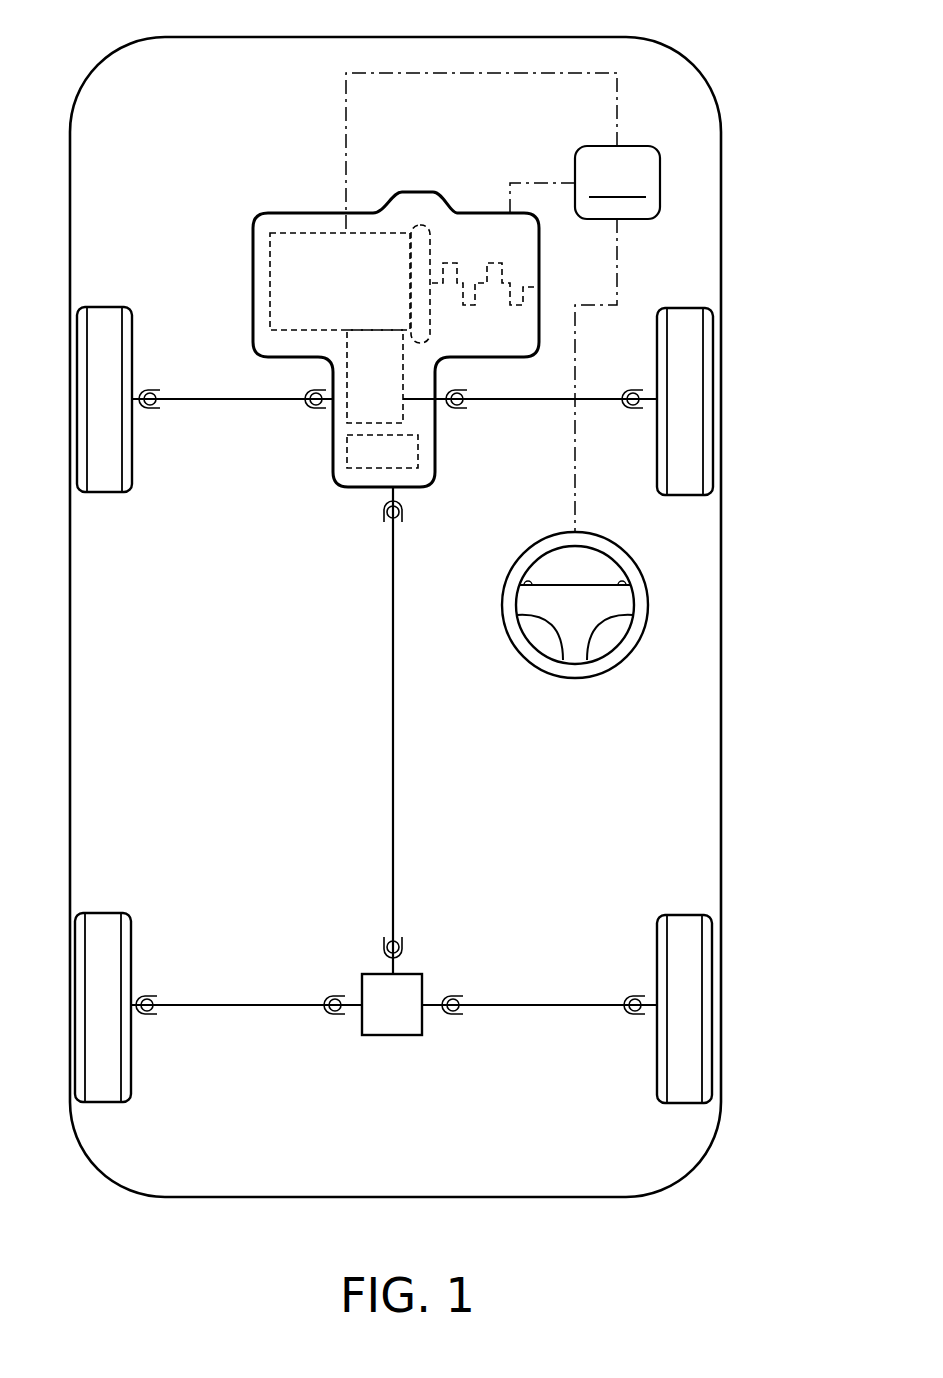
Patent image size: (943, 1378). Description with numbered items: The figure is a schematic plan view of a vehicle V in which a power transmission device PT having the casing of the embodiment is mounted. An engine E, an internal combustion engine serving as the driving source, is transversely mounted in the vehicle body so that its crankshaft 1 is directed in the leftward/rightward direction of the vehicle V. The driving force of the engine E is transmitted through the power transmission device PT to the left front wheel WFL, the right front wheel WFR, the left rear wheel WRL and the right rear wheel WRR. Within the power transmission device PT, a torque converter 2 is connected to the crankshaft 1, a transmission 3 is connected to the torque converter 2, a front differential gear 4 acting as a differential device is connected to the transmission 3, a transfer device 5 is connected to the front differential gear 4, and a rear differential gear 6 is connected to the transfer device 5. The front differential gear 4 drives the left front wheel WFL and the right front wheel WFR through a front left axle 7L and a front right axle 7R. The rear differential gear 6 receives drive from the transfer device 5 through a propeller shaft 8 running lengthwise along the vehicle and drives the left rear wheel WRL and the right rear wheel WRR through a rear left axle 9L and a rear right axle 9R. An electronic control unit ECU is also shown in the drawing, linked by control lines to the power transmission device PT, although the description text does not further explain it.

The vehicle V is at (686, 62).
The power transmission device PT is at (320, 180).
The engine E is at (479, 214).
The electronic control unit ECU is at (503, 302).
The crankshaft 1 is at (470, 307).
The torque converter 2 is at (425, 215).
The transmission 3 is at (284, 233).
The front differential gear 4 is at (405, 411).
The transfer device 5 is at (418, 445).
The rear differential gear 6 is at (390, 1018).
The front left axle 7L is at (265, 403).
The front right axle 7R is at (562, 405).
The propeller shaft 8 is at (396, 692).
The rear left axle 9L is at (263, 1010).
The rear right axle 9R is at (537, 1008).
The left front wheel WFL is at (105, 328).
The right front wheel WFR is at (685, 320).
The left rear wheel WRL is at (104, 935).
The right rear wheel WRR is at (684, 936).